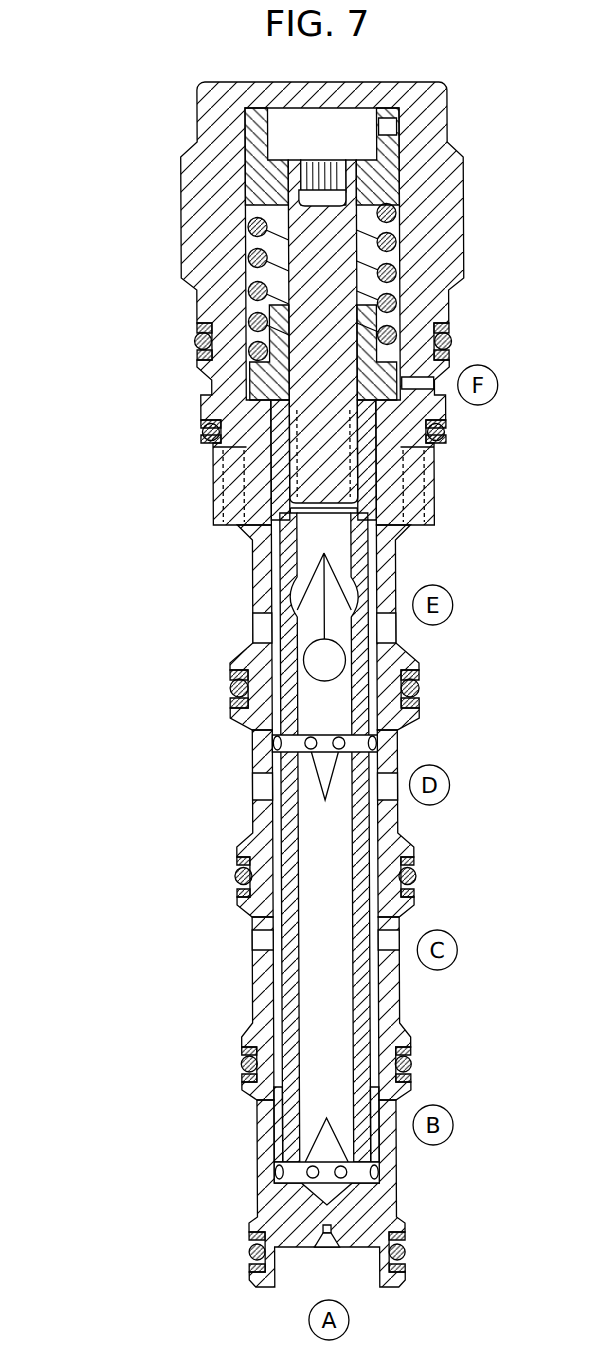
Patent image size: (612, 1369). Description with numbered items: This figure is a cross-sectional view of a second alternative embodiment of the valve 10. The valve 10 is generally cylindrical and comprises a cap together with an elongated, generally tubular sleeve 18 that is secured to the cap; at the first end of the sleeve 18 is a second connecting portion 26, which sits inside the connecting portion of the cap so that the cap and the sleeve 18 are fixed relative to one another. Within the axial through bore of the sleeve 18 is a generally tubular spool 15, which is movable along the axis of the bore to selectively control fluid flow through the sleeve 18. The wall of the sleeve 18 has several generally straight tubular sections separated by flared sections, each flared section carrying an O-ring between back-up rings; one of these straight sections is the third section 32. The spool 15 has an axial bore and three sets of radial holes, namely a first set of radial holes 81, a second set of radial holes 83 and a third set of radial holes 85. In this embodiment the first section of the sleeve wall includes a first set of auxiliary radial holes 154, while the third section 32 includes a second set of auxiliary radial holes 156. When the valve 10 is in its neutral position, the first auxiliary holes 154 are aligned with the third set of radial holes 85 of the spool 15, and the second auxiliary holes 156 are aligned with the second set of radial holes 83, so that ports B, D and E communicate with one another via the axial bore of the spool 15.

The valve 10 is at (148, 594).
The sleeve 18 is at (406, 560).
The third section 32 is at (395, 818).
The spool 15 is at (363, 982).
The second connecting portion 26 is at (251, 1193).
The first set of radial holes 81 is at (324, 603).
The second set of radial holes 83 is at (327, 791).
The third set of radial holes 85 is at (326, 1125).
The second set of auxiliary radial holes 156 is at (393, 745).
The first set of auxiliary radial holes 154 is at (391, 1170).